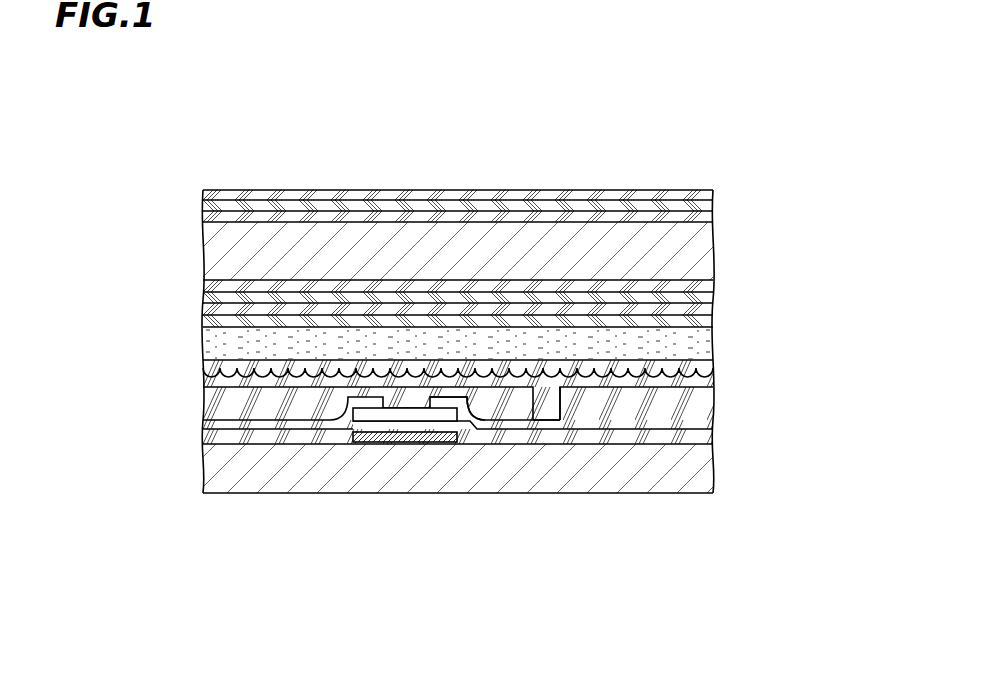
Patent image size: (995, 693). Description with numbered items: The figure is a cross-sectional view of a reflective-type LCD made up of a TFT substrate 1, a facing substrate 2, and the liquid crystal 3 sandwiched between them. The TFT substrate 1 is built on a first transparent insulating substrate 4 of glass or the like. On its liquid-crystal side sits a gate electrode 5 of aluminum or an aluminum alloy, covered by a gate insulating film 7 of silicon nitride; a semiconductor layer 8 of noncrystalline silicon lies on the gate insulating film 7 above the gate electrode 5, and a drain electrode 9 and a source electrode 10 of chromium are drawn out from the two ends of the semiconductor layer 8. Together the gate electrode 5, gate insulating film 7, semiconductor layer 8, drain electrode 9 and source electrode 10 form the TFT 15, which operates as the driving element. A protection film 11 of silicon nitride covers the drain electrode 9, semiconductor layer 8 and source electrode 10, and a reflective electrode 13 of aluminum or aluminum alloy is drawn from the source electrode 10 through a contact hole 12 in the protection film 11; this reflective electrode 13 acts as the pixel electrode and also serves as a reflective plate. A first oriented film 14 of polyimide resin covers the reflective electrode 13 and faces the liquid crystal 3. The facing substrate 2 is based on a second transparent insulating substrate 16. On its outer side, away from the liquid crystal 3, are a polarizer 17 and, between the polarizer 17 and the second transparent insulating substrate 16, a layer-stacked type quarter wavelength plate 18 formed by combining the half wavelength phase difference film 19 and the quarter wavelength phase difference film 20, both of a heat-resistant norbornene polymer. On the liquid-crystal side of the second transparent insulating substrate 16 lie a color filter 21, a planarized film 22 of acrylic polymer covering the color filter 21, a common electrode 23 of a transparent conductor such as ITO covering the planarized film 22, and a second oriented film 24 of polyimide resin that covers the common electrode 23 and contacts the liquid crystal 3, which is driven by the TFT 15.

The TFT substrate 1 is at (191, 485).
The facing substrate 2 is at (191, 315).
The liquid crystal 3 is at (235, 340).
The first transparent insulating substrate 4 is at (627, 483).
The gate electrode 5 is at (362, 442).
The gate insulating film 7 is at (260, 445).
The semiconductor layer 8 is at (412, 410).
The drain electrode 9 is at (222, 428).
The source electrode 10 is at (508, 427).
The protection film 11 is at (670, 415).
The contact hole 12 is at (552, 427).
The reflective electrode 13 is at (705, 400).
The first oriented film 14 is at (713, 382).
The TFT 15 is at (429, 502).
The second transparent insulating substrate 16 is at (713, 235).
The polarizer 17 is at (207, 191).
The layer-stacked type 1/4 wavelength plate 18 is at (713, 183).
The 1/2 wavelength phase difference film 19 is at (362, 203).
The 1/4 wavelength phase difference film 20 is at (403, 218).
The color filter 21 is at (713, 288).
The planarized film 22 is at (713, 298).
The common electrode 23 is at (713, 310).
The second oriented film 24 is at (713, 322).